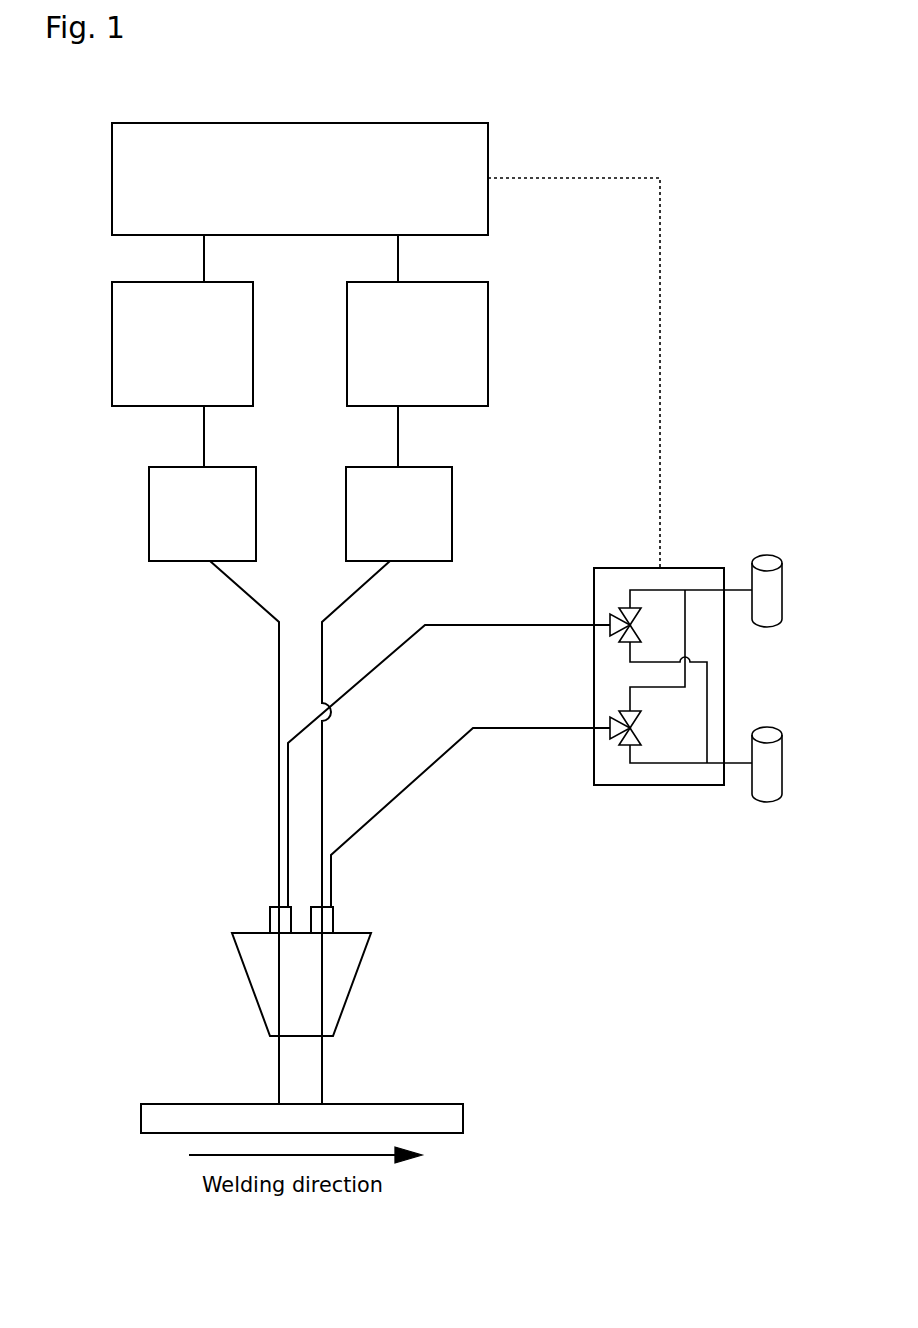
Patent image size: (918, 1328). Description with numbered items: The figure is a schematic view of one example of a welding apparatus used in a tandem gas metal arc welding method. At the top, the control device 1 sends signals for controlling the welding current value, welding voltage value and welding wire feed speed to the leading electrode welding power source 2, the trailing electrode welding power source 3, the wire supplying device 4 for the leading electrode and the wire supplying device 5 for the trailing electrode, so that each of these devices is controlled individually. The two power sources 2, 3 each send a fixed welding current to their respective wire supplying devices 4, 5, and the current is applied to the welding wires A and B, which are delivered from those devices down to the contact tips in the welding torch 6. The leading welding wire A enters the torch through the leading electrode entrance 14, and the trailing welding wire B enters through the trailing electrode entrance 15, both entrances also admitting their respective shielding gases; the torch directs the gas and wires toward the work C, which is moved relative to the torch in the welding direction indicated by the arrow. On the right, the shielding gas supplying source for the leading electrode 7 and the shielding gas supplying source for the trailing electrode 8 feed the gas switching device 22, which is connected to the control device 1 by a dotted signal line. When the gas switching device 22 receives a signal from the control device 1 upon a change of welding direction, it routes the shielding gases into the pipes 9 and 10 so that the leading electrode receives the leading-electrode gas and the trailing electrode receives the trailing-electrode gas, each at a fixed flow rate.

The control device 1 is at (385, 123).
The leading electrode welding power source 2 is at (488, 342).
The trailing electrode welding power source 3 is at (112, 332).
The wire supplying device for the leading electrode 4 is at (452, 512).
The wire supplying device for the trailing electrode 5 is at (149, 510).
The welding torch 6 is at (345, 973).
The shielding gas supplying source for the leading electrode 7 is at (773, 592).
The shielding gas supplying source for the trailing electrode 8 is at (773, 763).
The pipe 9 is at (348, 695).
The pipe 10 is at (405, 793).
The leading electrode entrance 14 is at (333, 920).
The trailing electrode entrance 15 is at (269, 920).
The gas switching device 22 is at (685, 568).
The leading welding wire A is at (367, 585).
The trailing welding wire B is at (240, 592).
The work C is at (447, 1118).